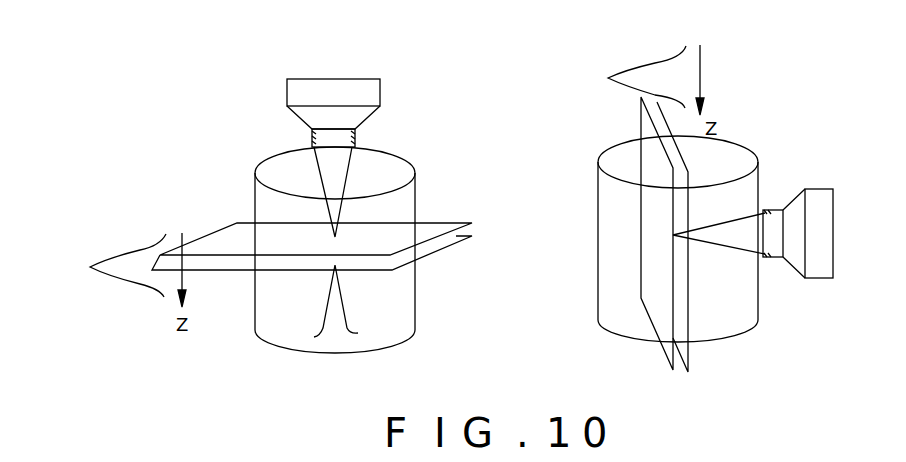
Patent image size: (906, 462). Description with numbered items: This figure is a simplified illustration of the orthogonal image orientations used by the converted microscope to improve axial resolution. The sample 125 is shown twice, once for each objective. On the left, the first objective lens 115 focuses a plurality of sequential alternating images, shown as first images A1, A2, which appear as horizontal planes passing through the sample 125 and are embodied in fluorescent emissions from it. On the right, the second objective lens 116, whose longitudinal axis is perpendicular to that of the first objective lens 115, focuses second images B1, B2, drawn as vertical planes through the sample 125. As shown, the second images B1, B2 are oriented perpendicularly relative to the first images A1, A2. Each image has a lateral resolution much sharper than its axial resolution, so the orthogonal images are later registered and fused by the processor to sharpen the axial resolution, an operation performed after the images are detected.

The first objective lens 115 is at (345, 90).
The second objective lens 116 is at (819, 207).
The sample 125 is at (283, 312).
The first image A1 is at (445, 239).
The first image A2 is at (435, 227).
The second image B1 is at (688, 308).
The second image B2 is at (660, 308).